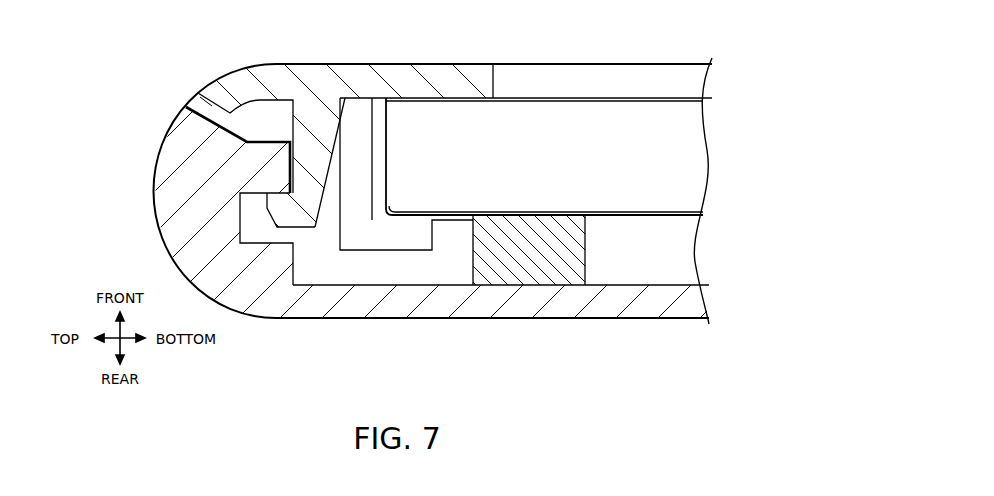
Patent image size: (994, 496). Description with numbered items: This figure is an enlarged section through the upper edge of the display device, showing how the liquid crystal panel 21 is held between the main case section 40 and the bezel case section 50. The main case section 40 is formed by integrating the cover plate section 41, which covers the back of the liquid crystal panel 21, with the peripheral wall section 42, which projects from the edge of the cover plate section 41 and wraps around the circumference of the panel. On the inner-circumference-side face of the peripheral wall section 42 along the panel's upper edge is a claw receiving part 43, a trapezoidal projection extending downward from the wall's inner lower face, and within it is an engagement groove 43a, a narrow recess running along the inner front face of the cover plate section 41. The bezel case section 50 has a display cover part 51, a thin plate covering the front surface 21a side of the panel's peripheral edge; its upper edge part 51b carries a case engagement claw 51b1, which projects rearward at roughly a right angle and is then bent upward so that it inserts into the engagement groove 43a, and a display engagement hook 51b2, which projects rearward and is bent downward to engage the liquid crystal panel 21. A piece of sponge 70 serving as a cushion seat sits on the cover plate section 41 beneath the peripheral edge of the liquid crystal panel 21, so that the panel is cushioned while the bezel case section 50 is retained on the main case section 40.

The main case section 40 is at (151, 262).
The cover plate section 41 is at (508, 303).
The peripheral wall section 42 is at (178, 187).
The claw receiving part 43 is at (277, 160).
The engagement groove 43a is at (268, 218).
The bezel case section 50 is at (458, 41).
The display cover part 51 is at (678, 72).
The upper edge part 51b is at (357, 72).
The case engagement claw 51b1 is at (321, 228).
The display engagement hook 51b2 is at (410, 237).
The liquid crystal panel 21 is at (677, 151).
The front surface 21a is at (627, 98).
The sponge 70 is at (550, 270).